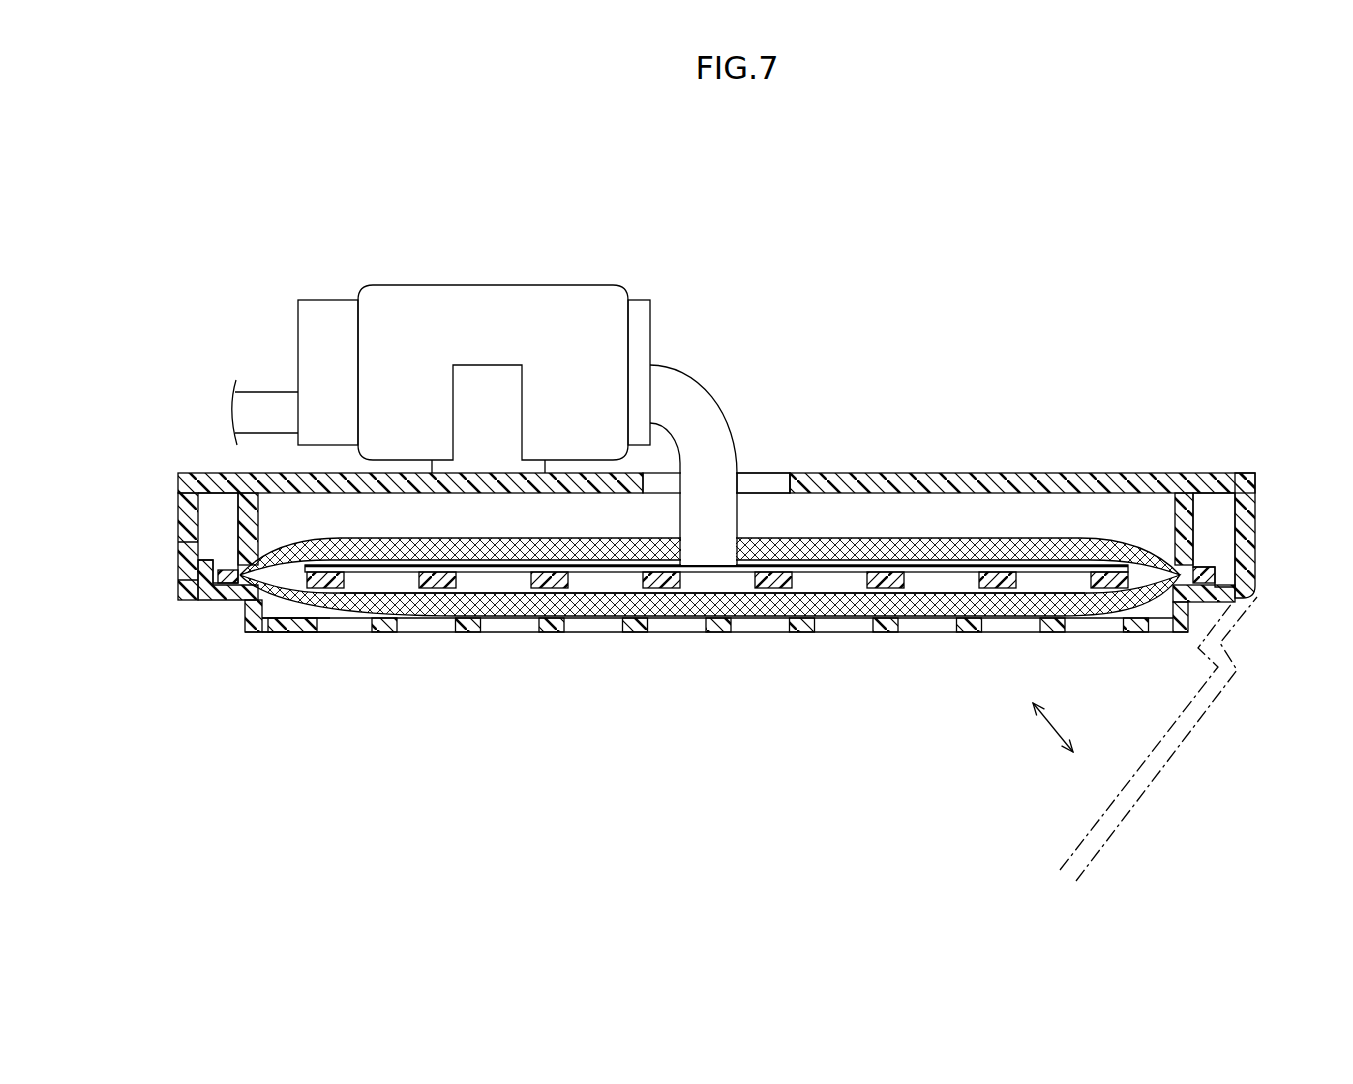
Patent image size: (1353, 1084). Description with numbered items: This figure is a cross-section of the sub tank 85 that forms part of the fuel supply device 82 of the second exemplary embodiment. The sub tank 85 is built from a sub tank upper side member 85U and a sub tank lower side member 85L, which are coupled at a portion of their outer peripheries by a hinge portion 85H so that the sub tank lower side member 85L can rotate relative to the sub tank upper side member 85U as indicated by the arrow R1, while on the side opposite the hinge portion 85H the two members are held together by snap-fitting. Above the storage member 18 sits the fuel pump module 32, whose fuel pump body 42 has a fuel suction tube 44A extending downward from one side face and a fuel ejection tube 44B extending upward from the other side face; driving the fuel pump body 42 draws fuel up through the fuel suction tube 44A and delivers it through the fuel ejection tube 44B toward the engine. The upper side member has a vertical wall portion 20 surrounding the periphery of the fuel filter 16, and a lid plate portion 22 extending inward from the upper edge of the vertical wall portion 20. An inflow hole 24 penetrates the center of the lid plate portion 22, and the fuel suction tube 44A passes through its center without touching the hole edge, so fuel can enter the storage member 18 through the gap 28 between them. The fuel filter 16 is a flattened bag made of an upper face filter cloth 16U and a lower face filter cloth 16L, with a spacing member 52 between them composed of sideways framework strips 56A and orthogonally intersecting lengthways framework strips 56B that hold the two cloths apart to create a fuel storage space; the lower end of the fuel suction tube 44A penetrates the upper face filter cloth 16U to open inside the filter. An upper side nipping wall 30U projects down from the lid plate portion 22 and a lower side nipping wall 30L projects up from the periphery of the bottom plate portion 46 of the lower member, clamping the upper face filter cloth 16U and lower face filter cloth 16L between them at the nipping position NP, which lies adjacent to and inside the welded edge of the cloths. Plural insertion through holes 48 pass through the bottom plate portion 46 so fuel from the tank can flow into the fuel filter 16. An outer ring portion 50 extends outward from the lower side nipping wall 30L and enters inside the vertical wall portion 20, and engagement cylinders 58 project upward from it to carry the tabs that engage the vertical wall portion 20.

The fuel supply device 82 is at (1040, 182).
The fuel pump module 32 is at (645, 258).
The fuel pump body 42 is at (405, 305).
The fuel suction tube 44A is at (709, 393).
The fuel ejection tube 44B is at (263, 392).
The gap 28 is at (748, 471).
The inflow hole 24 is at (773, 478).
The lid plate portion 22 is at (912, 476).
The storage member 18 is at (997, 476).
The sub tank 85 is at (1073, 416).
The sub tank upper side member 85U is at (178, 493).
The sub tank lower side member 85L is at (247, 641).
The hinge portion 85H is at (1250, 594).
The engagement cylinder 58 is at (213, 566).
The upper side nipping wall 30U is at (1173, 504).
The lower side nipping wall 30L is at (1173, 615).
The nipping position NP is at (1176, 551).
The vertical wall portion 20 is at (1247, 496).
The outer ring portion 50 is at (1224, 608).
The fuel filter 16 is at (1140, 634).
The upper face filter cloth 16U is at (271, 622).
The lower face filter cloth 16L is at (362, 620).
The bottom plate portion 46 is at (303, 632).
The insertion through hole 48 is at (487, 632).
The spacing member 52 is at (413, 588).
The sideways framework strip 56A is at (937, 572).
The lengthways framework strip 56B is at (858, 586).
The arrow R1 is at (1038, 733).